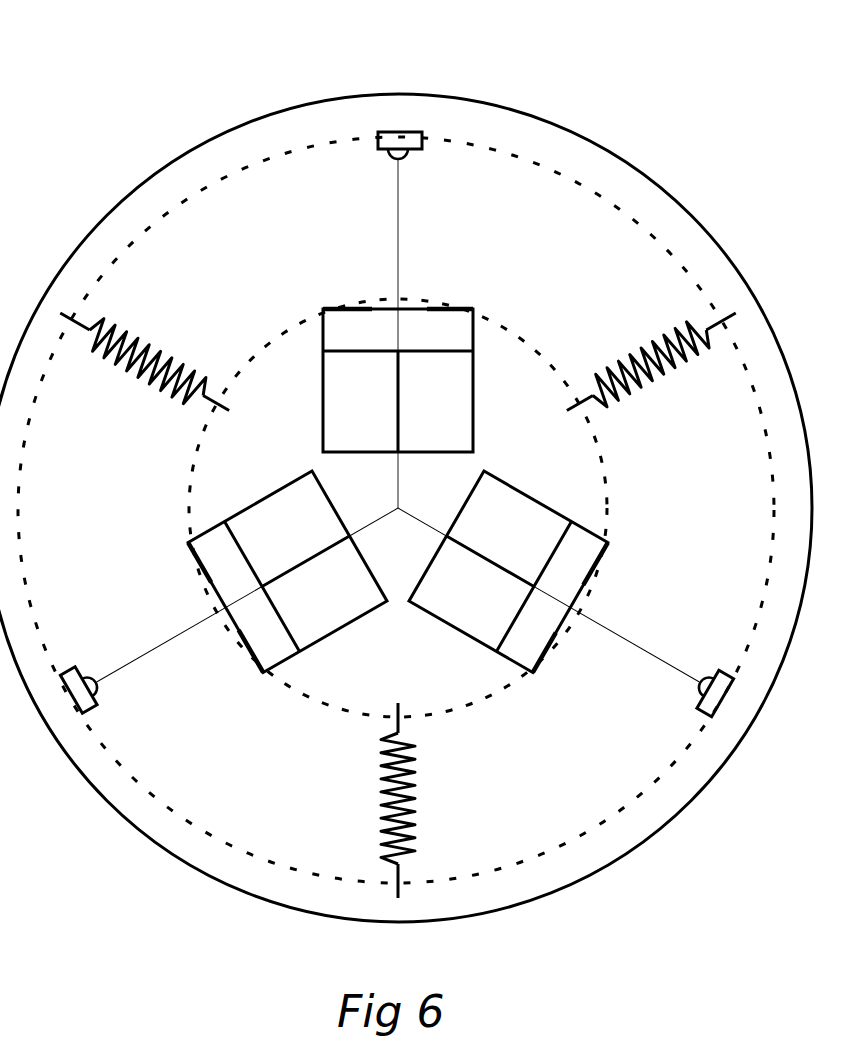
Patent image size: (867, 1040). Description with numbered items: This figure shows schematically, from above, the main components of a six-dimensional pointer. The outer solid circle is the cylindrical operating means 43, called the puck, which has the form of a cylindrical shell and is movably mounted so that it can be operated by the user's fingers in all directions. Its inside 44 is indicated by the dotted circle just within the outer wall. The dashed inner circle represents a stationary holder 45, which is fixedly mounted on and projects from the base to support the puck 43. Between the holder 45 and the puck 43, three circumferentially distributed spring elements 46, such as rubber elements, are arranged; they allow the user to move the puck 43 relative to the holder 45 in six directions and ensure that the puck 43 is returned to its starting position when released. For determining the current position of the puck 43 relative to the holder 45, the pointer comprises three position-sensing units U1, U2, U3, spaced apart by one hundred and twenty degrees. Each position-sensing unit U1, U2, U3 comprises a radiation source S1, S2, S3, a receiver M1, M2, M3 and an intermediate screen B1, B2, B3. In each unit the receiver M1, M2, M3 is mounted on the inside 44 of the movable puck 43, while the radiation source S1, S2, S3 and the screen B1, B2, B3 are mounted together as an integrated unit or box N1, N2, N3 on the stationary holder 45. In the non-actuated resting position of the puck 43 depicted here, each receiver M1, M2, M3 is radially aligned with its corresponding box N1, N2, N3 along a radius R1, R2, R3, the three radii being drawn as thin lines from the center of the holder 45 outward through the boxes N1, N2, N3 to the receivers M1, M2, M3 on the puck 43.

The cylindrical operating means 43 is at (515, 111).
The inside 44 is at (560, 174).
The stationary holder 45 is at (458, 710).
The spring elements 46 is at (640, 338).
The box N1 is at (440, 355).
The box N2 is at (230, 552).
The box N3 is at (531, 569).
The radiation source S1 is at (458, 416).
The radiation source S2 is at (284, 505).
The radiation source S3 is at (440, 605).
The screen B1 is at (398, 283).
The screen B2 is at (199, 608).
The screen B3 is at (544, 650).
The radius R1 is at (400, 230).
The radius R2 is at (147, 652).
The radius R3 is at (676, 669).
The receiver M1 is at (376, 143).
The receiver M2 is at (175, 657).
The receiver M3 is at (701, 710).
The position-sensing unit U1 is at (332, 320).
The position-sensing unit U2 is at (229, 629).
The position-sensing unit U3 is at (566, 626).